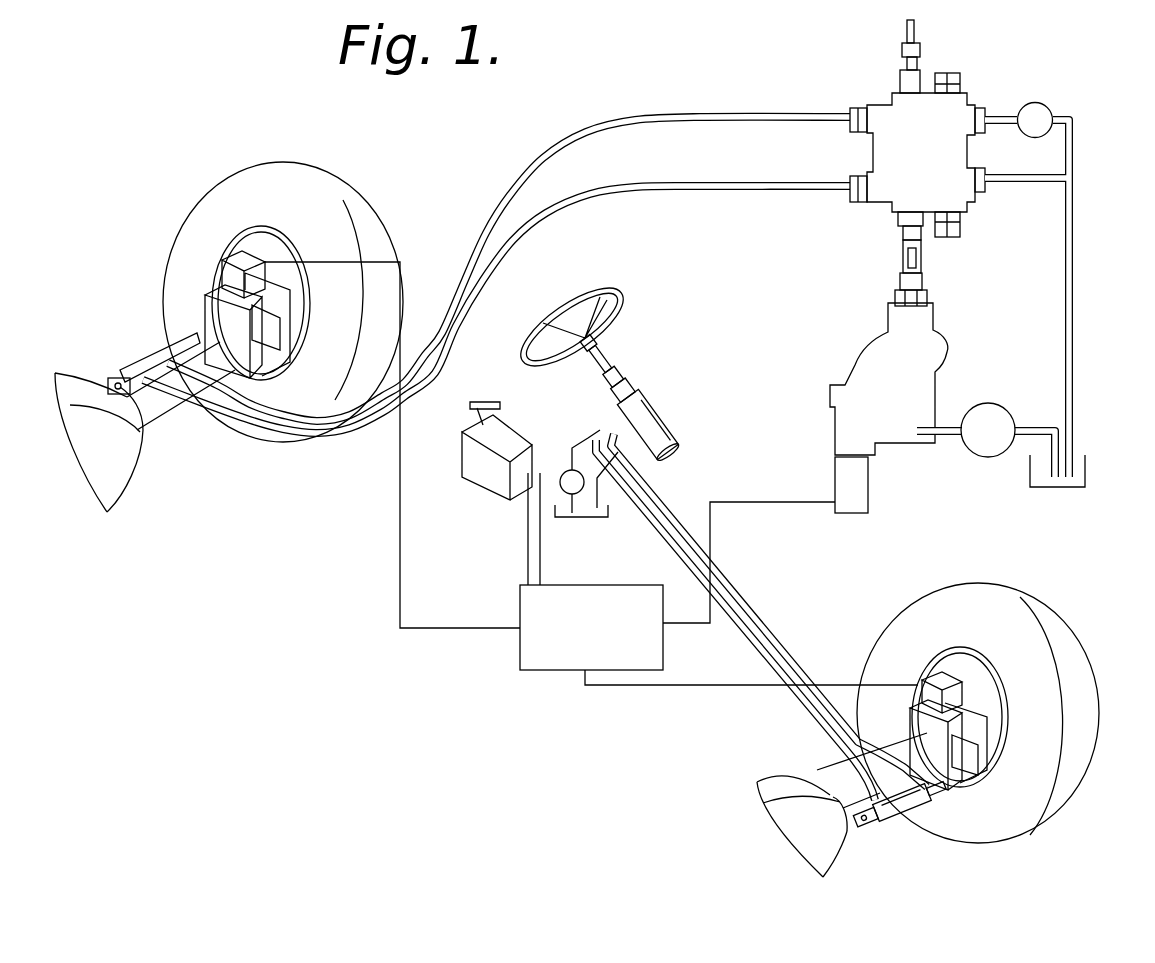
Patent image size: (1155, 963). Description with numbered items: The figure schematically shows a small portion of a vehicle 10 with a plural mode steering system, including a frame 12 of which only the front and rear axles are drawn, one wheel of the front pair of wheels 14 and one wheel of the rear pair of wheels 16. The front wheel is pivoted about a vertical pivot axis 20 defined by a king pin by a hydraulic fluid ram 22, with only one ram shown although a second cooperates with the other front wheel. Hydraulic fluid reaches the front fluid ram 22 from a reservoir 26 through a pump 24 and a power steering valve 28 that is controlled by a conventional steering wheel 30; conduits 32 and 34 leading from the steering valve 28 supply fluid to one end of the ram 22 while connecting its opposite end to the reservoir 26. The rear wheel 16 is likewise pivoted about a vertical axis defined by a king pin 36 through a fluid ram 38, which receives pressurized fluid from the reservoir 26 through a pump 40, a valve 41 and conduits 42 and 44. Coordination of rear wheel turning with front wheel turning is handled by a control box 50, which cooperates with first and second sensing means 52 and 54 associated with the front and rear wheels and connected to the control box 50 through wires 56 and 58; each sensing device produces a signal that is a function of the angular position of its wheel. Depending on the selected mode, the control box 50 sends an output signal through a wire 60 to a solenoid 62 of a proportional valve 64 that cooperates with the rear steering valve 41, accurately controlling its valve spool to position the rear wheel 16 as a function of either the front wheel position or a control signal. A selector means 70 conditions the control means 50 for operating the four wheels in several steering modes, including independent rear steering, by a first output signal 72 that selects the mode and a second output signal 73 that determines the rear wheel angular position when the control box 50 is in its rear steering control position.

The vehicle 10 is at (92, 165).
The frame 12 is at (170, 443).
The front pair of wheels 14 is at (1040, 618).
The rear pair of wheels 16 is at (343, 213).
The vertical pivot axes 20 is at (955, 750).
The fluid ram 22 is at (893, 824).
The pump 24 is at (563, 473).
The reservoir 26 is at (1070, 490).
The power steering valve 28 is at (650, 415).
The steering wheel 30 is at (612, 302).
The conduit 32 is at (768, 634).
The conduit 34 is at (738, 648).
The king pins 36 is at (268, 336).
The fluid ram 38 is at (146, 360).
The pump 40 is at (1034, 104).
The valve 41 is at (898, 110).
The conduit 42 is at (737, 118).
The conduit 44 is at (745, 190).
The control box 50 is at (558, 675).
The first sensing means 52 is at (940, 680).
The second sensing means 54 is at (222, 267).
The wire 56 is at (648, 688).
The wire 58 is at (400, 545).
The wire 60 is at (762, 503).
The solenoid 62 is at (855, 492).
The proportional valve 64 is at (862, 370).
The selector means 70 is at (480, 493).
The first output signal 72 is at (527, 555).
The second output signal 73 is at (545, 558).